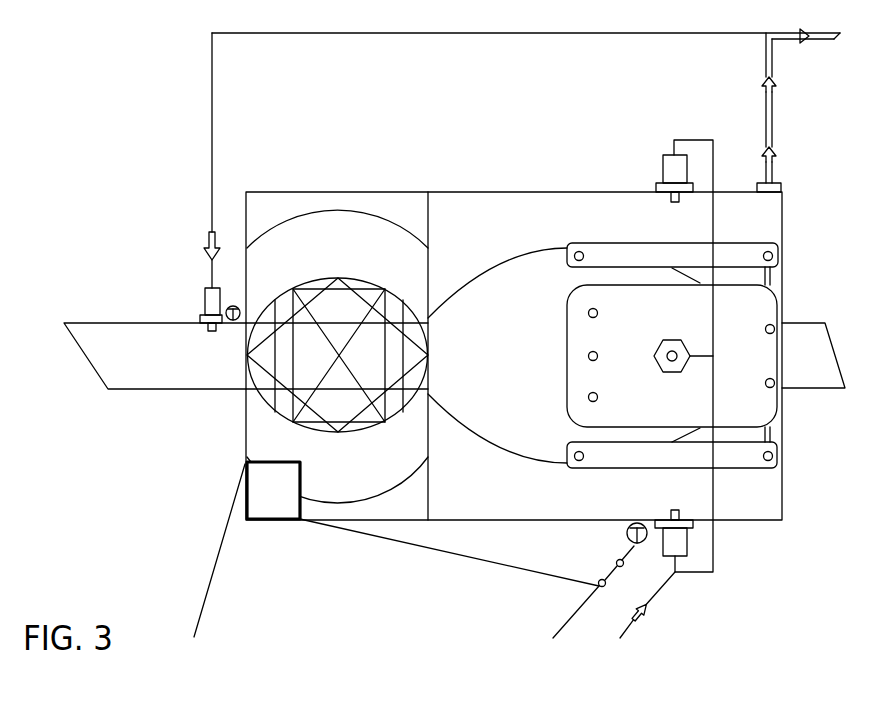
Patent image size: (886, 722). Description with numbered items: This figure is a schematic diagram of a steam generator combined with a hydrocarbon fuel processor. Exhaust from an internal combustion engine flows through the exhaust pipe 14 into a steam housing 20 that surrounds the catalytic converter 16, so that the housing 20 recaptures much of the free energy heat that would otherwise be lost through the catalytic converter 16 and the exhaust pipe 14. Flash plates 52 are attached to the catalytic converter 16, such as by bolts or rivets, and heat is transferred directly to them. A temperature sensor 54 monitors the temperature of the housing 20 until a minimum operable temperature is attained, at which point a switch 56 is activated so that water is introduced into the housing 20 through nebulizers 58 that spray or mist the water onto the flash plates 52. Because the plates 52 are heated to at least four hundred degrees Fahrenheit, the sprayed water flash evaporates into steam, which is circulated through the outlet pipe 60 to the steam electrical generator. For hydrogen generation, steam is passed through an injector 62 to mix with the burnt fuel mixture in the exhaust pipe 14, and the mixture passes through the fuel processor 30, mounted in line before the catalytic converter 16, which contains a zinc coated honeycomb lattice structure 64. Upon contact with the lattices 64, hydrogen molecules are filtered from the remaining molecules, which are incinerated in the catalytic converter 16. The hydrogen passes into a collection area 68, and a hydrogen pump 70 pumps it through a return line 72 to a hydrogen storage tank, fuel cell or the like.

The exhaust pipe 14 is at (457, 379).
The catalytic converter 16 is at (564, 447).
The steam housing 20 is at (514, 410).
The fuel processor 30 is at (302, 186).
The flash plates 52 is at (708, 386).
The temperature sensor 54 is at (676, 584).
The switch 56 is at (487, 593).
The nebulizers 58 is at (671, 371).
The outlet pipe 60 is at (523, 319).
The injector 62 is at (187, 300).
The honeycomb lattice structure 64 is at (299, 364).
The collection area 68 is at (340, 399).
The hydrogen pump 70 is at (295, 558).
The return line 72 is at (195, 550).